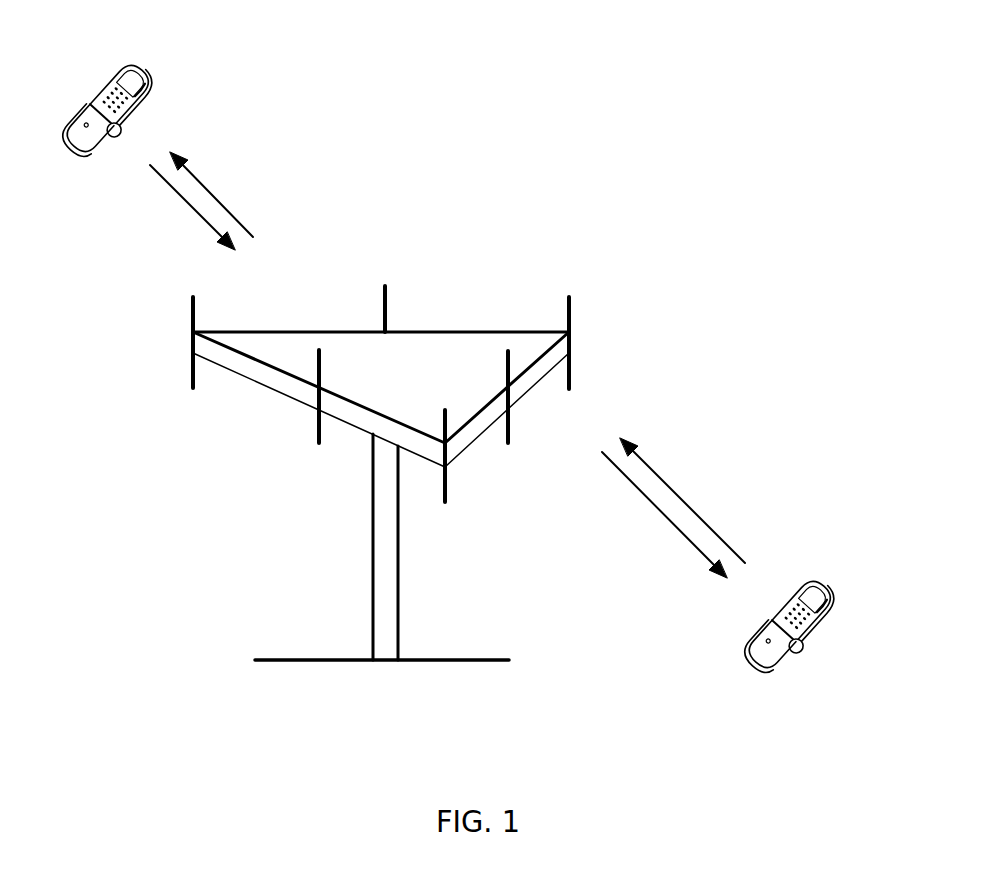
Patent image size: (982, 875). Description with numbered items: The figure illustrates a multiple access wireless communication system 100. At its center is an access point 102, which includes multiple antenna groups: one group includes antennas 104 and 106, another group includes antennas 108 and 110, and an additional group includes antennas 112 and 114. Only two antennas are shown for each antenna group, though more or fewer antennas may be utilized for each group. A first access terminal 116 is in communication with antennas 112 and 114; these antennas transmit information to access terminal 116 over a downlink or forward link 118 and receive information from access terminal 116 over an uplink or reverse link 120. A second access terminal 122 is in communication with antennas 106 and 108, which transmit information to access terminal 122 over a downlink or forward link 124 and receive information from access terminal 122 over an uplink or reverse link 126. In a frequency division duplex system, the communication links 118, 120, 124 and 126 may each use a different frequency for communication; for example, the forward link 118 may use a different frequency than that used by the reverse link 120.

The multiple access wireless communication system 100 is at (641, 93).
The access point 102 is at (384, 663).
The antenna 104 is at (571, 305).
The antenna 106 is at (508, 440).
The antenna 108 is at (446, 502).
The antenna 110 is at (319, 443).
The antenna 112 is at (195, 303).
The antenna 114 is at (386, 290).
The access terminal 116 is at (135, 63).
The forward link 118 is at (212, 190).
The reverse link 120 is at (192, 208).
The access terminal 122 is at (817, 583).
The forward link 124 is at (658, 517).
The reverse link 126 is at (680, 497).